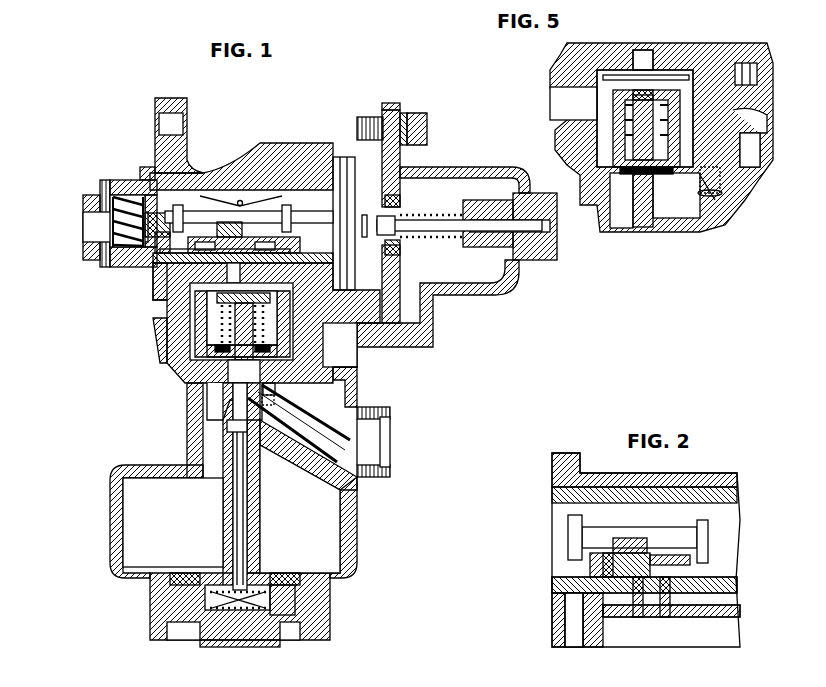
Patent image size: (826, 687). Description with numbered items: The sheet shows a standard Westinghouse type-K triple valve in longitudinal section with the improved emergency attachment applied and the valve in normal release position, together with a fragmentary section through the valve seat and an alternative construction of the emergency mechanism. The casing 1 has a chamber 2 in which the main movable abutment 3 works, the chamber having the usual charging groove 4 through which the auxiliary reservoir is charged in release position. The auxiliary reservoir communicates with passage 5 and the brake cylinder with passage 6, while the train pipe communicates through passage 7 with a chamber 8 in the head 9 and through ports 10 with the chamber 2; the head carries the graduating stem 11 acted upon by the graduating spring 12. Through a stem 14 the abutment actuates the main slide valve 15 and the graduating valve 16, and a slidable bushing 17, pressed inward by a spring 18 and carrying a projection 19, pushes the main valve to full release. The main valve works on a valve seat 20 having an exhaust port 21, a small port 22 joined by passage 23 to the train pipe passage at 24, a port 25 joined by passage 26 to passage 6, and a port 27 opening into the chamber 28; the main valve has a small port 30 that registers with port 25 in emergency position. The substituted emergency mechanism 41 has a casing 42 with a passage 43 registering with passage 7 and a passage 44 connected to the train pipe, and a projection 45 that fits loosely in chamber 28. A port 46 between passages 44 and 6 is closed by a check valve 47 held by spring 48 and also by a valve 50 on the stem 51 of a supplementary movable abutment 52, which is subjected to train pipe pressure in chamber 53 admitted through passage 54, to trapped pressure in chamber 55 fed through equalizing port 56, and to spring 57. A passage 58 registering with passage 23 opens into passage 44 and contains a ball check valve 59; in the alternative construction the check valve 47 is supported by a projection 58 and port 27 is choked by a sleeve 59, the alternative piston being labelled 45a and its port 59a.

In FIG. 1, the casing 1 is at (315, 172).
In FIG. 1, the chamber 2 is at (373, 173).
In FIG. 1, the main movable abutment 3 is at (350, 254).
In FIG. 5, the main movable abutment 3 is at (758, 76).
In FIG. 1, the charging groove 4 is at (345, 172).
In FIG. 1, the passage 5 is at (88, 219).
In FIG. 1, the passage 6 is at (160, 318).
In FIG. 2, the passage 6 is at (575, 640).
In FIG. 1, the passage 7 is at (340, 345).
In FIG. 5, the passage 7 is at (700, 150).
In FIG. 1, the chamber 8 is at (432, 219).
In FIG. 1, the head 9 is at (478, 176).
In FIG. 1, the ports 10 is at (398, 201).
In FIG. 1, the graduating stem 11 is at (445, 229).
In FIG. 1, the graduating spring 12 is at (490, 208).
In FIG. 1, the stem 14 is at (310, 216).
In FIG. 2, the stem 14 is at (725, 537).
In FIG. 1, the main slide valve 15 is at (266, 216).
In FIG. 2, the main slide valve 15 is at (680, 555).
In FIG. 1, the graduating valve 16 is at (228, 222).
In FIG. 2, the graduating valve 16 is at (620, 538).
In FIG. 1, the slidable bushing 17 is at (150, 174).
In FIG. 1, the spring 18 is at (118, 193).
In FIG. 1, the projection 19 is at (137, 271).
In FIG. 1, the valve seat 20 is at (323, 258).
In FIG. 2, the valve seat 20 is at (737, 583).
In FIG. 2, the exhaust port 21 is at (740, 604).
In FIG. 1, the small port 22 is at (287, 257).
In FIG. 1, the passage 23 is at (277, 274).
In FIG. 5, the passage 23 is at (722, 72).
In FIG. 1, the junction point 24 is at (292, 412).
In FIG. 5, the junction point 24 is at (710, 210).
In FIG. 2, the port 25 is at (637, 617).
In FIG. 2, the passage 26 is at (583, 600).
In FIG. 1, the port 27 is at (190, 280).
In FIG. 2, the port 27 is at (665, 617).
In FIG. 1, the chamber 28 is at (225, 335).
In FIG. 5, the chamber 28 is at (612, 73).
In FIG. 2, the small port 30 is at (590, 568).
In FIG. 1, the emergency mechanism 41 is at (136, 521).
In FIG. 1, the casing 42 is at (350, 537).
In FIG. 1, the passage 43 is at (350, 382).
In FIG. 1, the passage 44 is at (368, 445).
In FIG. 1, the projection 45 is at (270, 342).
In FIG. 5, the piston valve 45a is at (618, 108).
In FIG. 1, the port 46 is at (238, 395).
In FIG. 1, the check valve 47 is at (237, 385).
In FIG. 5, the check valve 47 is at (660, 95).
In FIG. 1, the spring 48 is at (230, 345).
In FIG. 1, the valve 50 is at (252, 456).
In FIG. 1, the stem 51 is at (250, 490).
In FIG. 1, the supplementary movable abutment 52 is at (290, 575).
In FIG. 1, the chamber 53 is at (285, 612).
In FIG. 1, the passage 54 is at (244, 525).
In FIG. 1, the chamber 55 is at (231, 509).
In FIG. 1, the equalizing port 56 is at (205, 575).
In FIG. 1, the spring 57 is at (236, 612).
In FIG. 1, the passage 58 is at (278, 388).
In FIG. 1, the ball check valve 59 is at (278, 401).
In FIG. 5, the ball check valve 59 is at (720, 190).
In FIG. 5, the port 59a is at (662, 70).